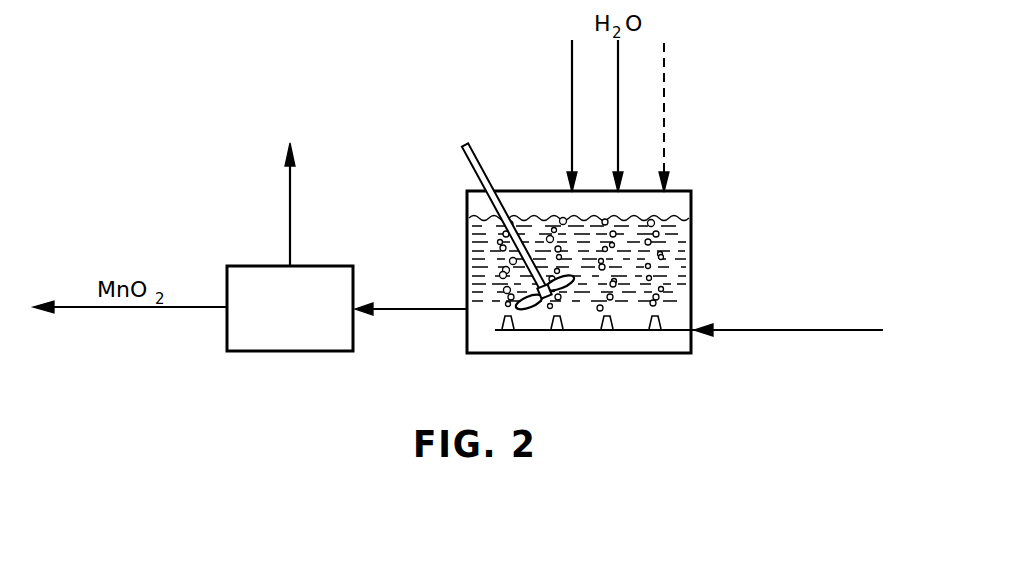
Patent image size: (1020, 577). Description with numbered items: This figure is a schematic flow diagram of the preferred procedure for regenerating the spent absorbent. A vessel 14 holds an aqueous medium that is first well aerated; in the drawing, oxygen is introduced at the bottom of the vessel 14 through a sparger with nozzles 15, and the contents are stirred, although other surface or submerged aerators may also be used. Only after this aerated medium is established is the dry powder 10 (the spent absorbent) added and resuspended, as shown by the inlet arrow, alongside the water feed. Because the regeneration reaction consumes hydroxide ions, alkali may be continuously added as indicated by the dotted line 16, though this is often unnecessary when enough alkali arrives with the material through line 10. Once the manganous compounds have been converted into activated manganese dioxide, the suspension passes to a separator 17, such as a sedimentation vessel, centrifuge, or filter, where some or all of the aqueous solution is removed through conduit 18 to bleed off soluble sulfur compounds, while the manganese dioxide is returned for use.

The dry powder 10 is at (571, 72).
The vessel 14 is at (722, 222).
The gas distributor nozzles 15 is at (608, 368).
The dotted line 16 is at (705, 92).
The separator 17 is at (270, 378).
The conduit 18 is at (289, 203).